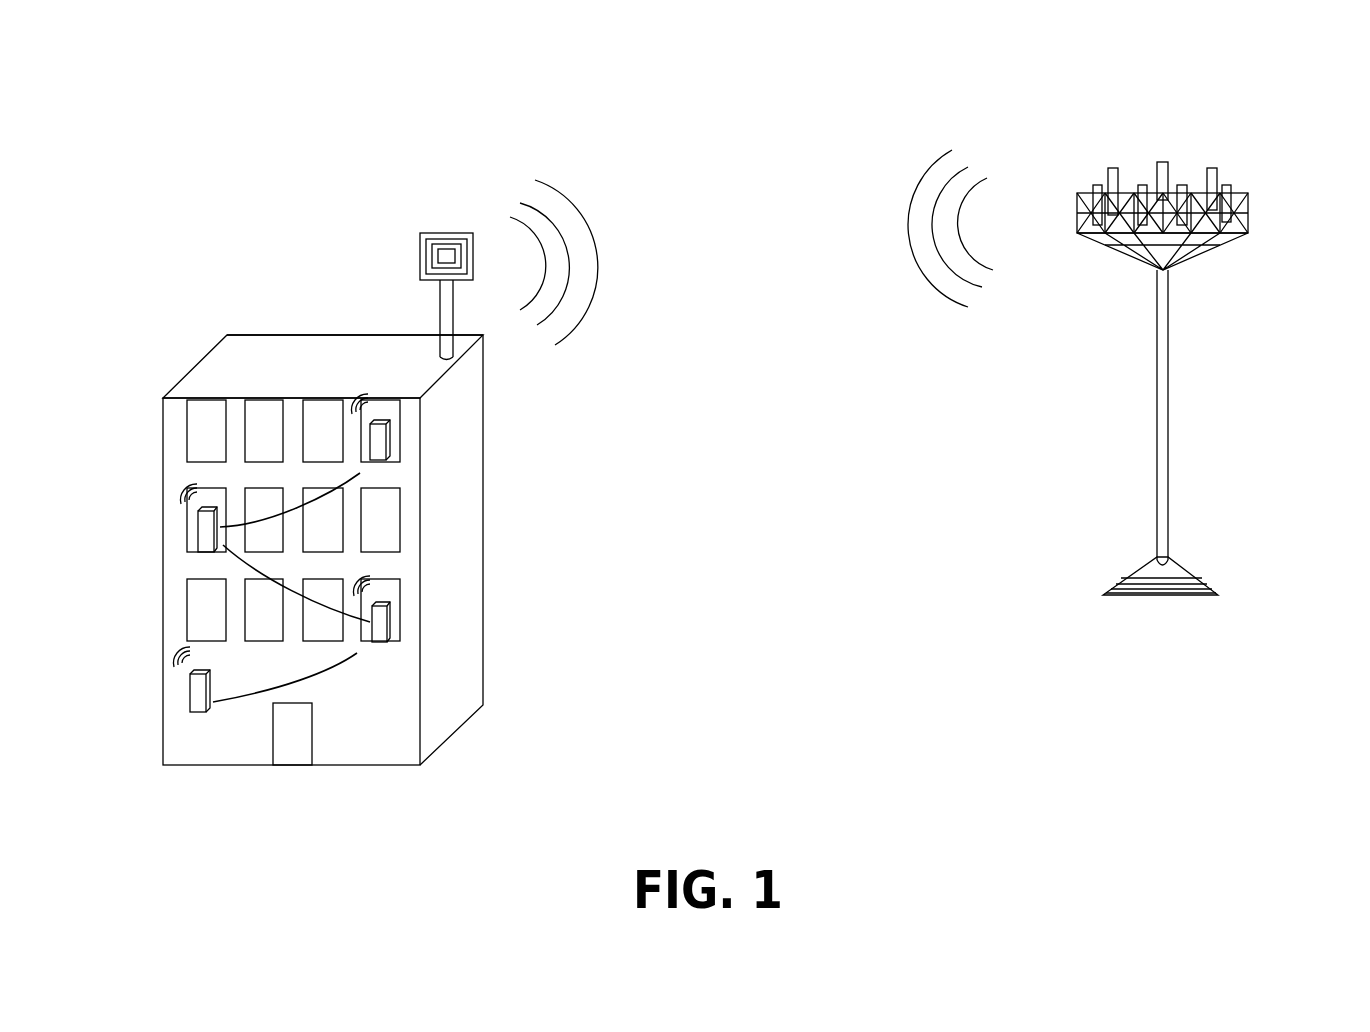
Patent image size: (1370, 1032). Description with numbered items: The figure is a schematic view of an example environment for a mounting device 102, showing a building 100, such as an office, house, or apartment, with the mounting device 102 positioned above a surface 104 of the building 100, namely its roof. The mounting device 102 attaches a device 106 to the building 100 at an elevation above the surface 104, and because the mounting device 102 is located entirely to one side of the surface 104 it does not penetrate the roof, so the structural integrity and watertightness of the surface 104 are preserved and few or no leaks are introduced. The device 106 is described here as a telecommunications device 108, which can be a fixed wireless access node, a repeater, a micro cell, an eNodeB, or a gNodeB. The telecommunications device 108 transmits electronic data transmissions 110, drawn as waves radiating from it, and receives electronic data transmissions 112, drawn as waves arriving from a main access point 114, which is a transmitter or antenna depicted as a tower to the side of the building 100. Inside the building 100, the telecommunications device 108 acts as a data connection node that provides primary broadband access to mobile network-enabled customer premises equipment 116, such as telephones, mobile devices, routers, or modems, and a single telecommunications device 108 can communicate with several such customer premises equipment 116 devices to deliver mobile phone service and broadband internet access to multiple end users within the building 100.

The building 100 is at (484, 544).
The mounting device 102 is at (440, 310).
The surface 104 is at (256, 362).
The device 106 is at (420, 252).
The telecommunications device 108 is at (448, 233).
The electronic data transmissions 110 is at (510, 175).
The electronic data transmissions 112 is at (975, 135).
The main access point 114 is at (1250, 213).
The customer premises equipment 116 is at (400, 614).